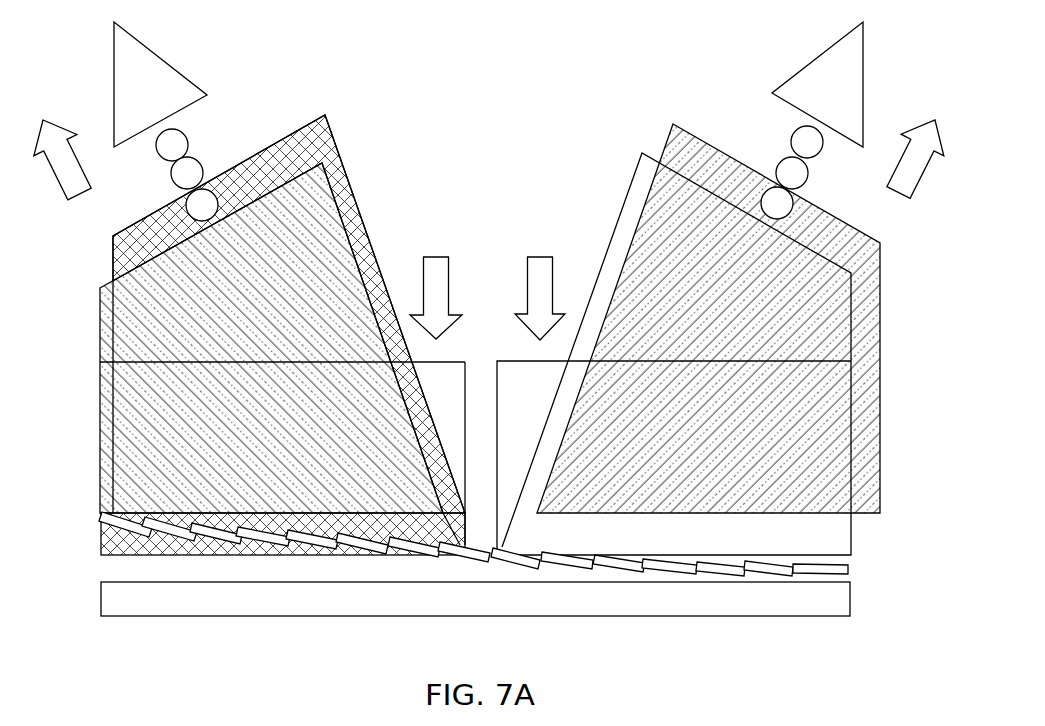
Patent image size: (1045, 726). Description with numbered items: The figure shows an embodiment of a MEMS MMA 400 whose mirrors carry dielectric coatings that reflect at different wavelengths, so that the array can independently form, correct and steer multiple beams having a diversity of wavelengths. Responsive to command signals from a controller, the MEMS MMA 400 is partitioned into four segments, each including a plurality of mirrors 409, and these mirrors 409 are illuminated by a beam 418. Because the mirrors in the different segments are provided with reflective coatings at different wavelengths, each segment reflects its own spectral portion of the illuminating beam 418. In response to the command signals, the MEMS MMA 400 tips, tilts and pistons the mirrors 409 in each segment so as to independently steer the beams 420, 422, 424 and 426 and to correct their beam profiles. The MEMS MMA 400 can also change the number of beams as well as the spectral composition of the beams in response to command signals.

The MEMS MMA 400 is at (648, 62).
The mirrors 409 is at (118, 528).
The beam 418 is at (527, 285).
The beam 420 is at (163, 207).
The beam 422 is at (356, 230).
The beam 424 is at (833, 220).
The beam 426 is at (623, 202).